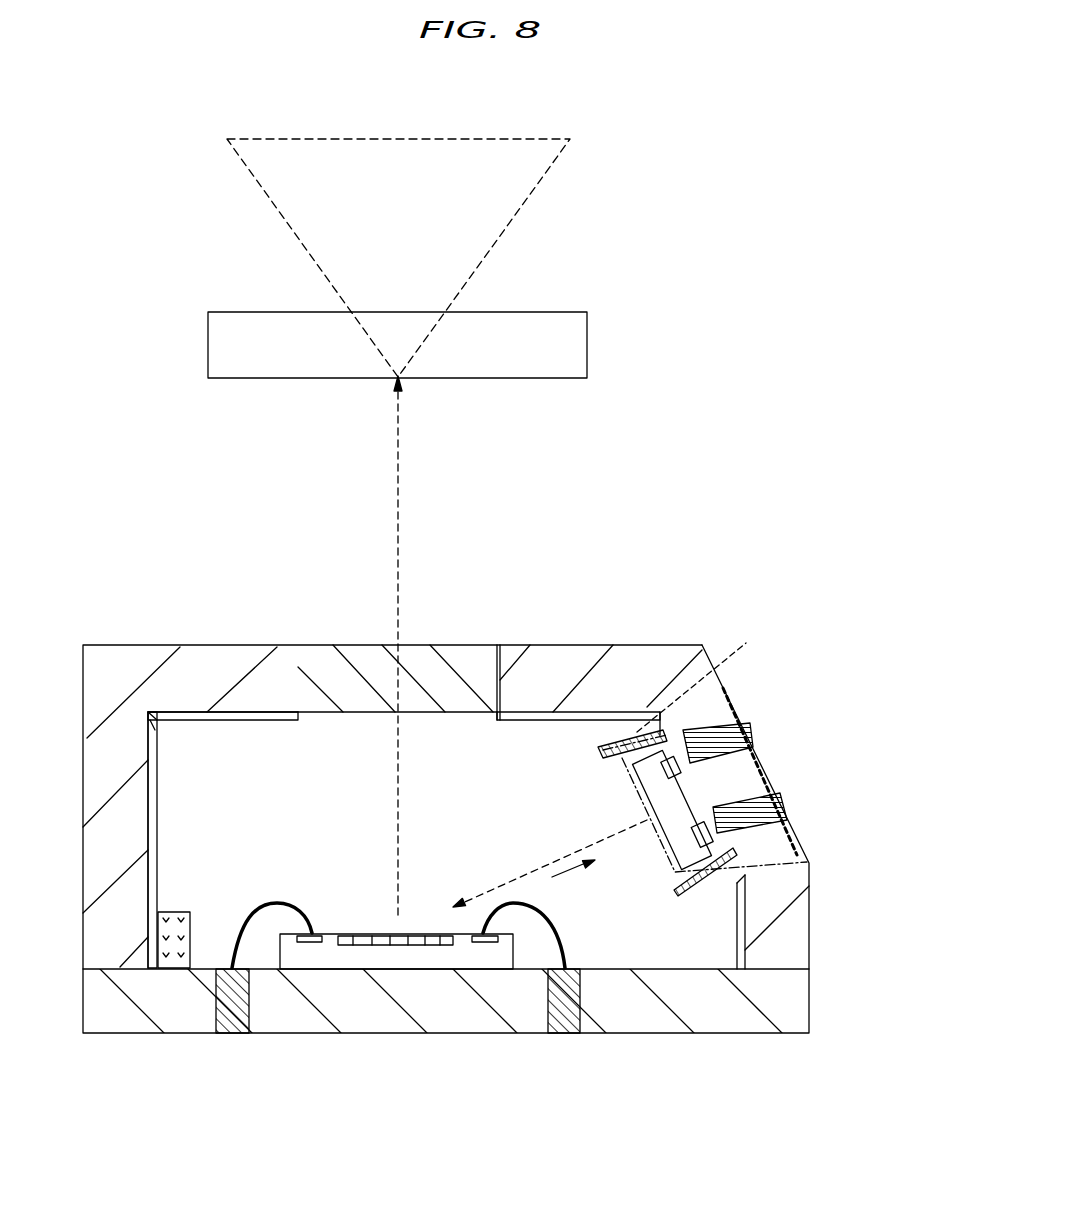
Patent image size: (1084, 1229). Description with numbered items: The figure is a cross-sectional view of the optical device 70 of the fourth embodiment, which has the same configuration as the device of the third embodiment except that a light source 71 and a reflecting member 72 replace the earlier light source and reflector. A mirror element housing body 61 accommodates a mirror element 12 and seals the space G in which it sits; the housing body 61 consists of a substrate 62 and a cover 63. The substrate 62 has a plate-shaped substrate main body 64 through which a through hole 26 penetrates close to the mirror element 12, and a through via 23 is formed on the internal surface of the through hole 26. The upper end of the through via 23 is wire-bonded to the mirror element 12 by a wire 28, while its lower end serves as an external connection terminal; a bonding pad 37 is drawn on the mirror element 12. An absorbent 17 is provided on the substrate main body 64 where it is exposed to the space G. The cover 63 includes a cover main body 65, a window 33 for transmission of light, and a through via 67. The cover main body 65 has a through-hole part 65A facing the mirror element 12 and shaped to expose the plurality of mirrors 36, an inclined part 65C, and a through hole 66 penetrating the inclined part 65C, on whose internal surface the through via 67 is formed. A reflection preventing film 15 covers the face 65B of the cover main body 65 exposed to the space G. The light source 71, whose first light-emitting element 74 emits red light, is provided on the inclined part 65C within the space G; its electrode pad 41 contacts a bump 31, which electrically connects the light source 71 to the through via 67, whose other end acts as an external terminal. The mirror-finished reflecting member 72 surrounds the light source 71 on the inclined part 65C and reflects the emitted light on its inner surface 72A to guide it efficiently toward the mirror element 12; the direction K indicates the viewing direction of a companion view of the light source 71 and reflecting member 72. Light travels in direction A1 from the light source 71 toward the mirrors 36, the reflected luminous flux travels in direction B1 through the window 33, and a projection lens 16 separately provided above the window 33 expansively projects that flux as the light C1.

The optical device 70 is at (158, 149).
The light expansively projected through the projection lens C1 is at (545, 183).
The projection lens 16 is at (580, 340).
The travel direction of reflected luminous flux B1 is at (405, 460).
The mirror element housing body 61 is at (890, 867).
The substrate 62 is at (828, 965).
The cover 63 is at (818, 899).
The substrate main body 64 is at (118, 1017).
The cover main body 65 is at (228, 680).
The through-hole part 65A is at (490, 663).
The face of the cover main body 65B is at (158, 736).
The inclined part 65C is at (717, 735).
The window for transmission of light 33 is at (328, 687).
The reflection preventing film 15 is at (270, 712).
The space G is at (492, 790).
The reflecting member 72 is at (610, 727).
The inner surface of the reflecting member 72A is at (582, 727).
The first light-emitting element 74 is at (652, 851).
The through hole 66 is at (723, 740).
The through via 67 is at (700, 770).
The electrode pad 41 is at (695, 710).
The bump 31 is at (697, 717).
The light source 71 is at (773, 860).
The travel direction of emitted light A1 is at (550, 863).
The viewing direction K is at (573, 879).
The absorbent 17 is at (177, 975).
The through hole 26 is at (242, 1033).
The through via 23 is at (220, 1033).
The mirror element 12 is at (470, 982).
The bonding pad 37 is at (310, 942).
The mirrors 36 is at (415, 945).
The wire 28 is at (527, 940).